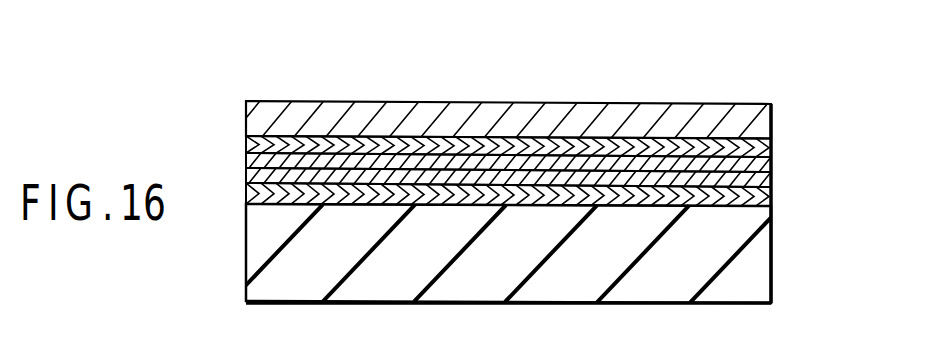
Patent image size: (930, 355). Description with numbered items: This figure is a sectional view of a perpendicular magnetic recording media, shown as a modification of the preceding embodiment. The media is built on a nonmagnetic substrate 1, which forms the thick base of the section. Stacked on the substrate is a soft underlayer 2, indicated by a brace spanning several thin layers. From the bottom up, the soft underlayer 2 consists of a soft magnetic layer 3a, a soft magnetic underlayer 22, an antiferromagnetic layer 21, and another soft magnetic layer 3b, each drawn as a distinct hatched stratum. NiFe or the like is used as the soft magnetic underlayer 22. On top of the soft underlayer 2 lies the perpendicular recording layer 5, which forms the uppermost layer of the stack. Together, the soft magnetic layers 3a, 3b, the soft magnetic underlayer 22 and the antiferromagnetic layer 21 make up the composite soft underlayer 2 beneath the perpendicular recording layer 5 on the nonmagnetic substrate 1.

The perpendicular recording layer 5 is at (771, 113).
The soft magnetic layer 3b is at (771, 144).
The antiferromagnetic layer 21 is at (771, 158).
The soft magnetic underlayer 22 is at (771, 177).
The soft magnetic layer 3a is at (538, 205).
The soft underlayer 2 is at (560, 163).
The nonmagnetic substrate 1 is at (762, 275).